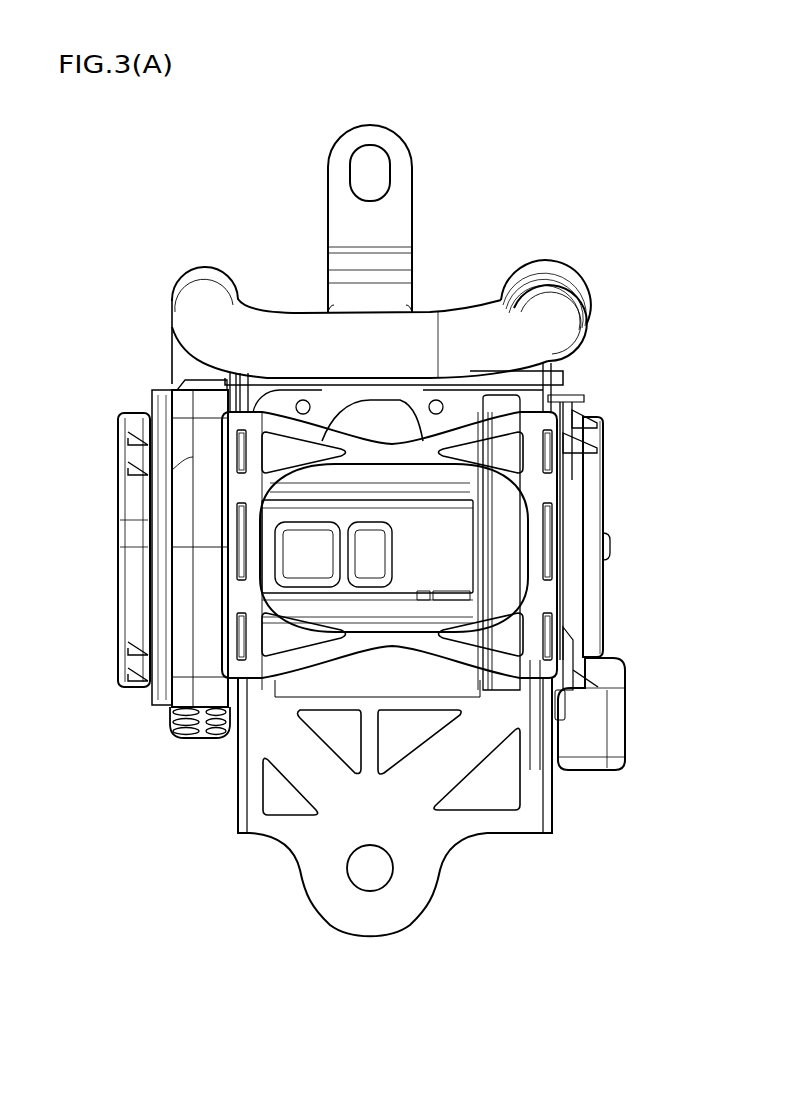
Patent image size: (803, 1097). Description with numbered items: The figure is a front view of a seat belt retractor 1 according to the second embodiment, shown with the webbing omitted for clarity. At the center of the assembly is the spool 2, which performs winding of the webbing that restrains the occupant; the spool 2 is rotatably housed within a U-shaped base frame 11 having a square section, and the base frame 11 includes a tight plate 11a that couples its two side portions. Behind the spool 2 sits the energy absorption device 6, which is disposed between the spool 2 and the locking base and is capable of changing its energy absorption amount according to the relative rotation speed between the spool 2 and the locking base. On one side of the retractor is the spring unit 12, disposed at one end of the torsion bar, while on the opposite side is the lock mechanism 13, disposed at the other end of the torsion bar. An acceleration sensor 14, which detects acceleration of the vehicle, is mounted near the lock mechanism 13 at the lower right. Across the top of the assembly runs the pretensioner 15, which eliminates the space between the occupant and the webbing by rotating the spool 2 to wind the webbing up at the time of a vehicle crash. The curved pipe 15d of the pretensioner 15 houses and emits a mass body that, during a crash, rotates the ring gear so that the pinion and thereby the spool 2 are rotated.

The seat belt retractor 1 is at (543, 189).
The spool 2 is at (440, 559).
The energy absorption device 6 is at (491, 393).
The base frame 11 is at (238, 798).
The tight plate 11a is at (398, 652).
The spring unit 12 is at (117, 507).
The lock mechanism 13 is at (607, 485).
The acceleration sensor 14 is at (622, 716).
The pretensioner 15 is at (161, 367).
The pipe 15d is at (282, 318).